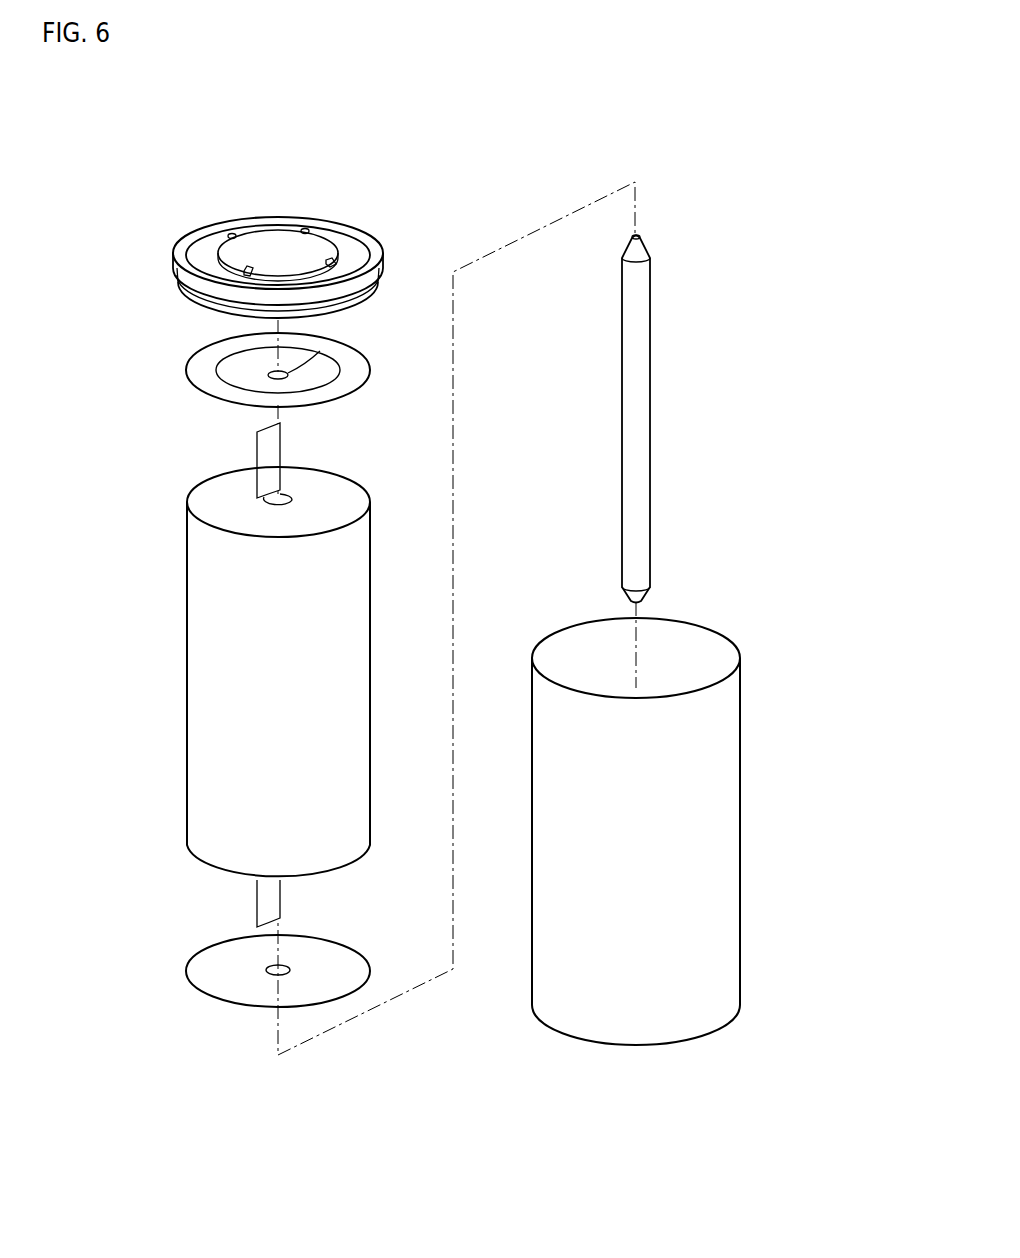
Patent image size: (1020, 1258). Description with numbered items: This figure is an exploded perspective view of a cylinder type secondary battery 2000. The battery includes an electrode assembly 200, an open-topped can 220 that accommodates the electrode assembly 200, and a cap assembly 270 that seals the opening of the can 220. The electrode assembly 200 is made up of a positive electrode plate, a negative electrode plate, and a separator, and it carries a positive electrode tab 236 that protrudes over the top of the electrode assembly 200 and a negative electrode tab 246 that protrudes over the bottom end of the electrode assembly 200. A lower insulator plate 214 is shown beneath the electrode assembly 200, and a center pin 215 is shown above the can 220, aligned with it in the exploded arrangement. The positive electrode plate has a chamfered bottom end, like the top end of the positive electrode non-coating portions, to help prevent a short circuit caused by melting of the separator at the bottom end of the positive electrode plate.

The cylinder type secondary battery 2000 is at (614, 129).
The cap assembly 270 is at (158, 317).
The positive electrode tab 236 is at (266, 452).
The electrode assembly 200 is at (178, 538).
The negative electrode tab 246 is at (267, 903).
The lower insulator plate 214 is at (205, 972).
The center pin 215 is at (645, 402).
The can 220 is at (710, 803).